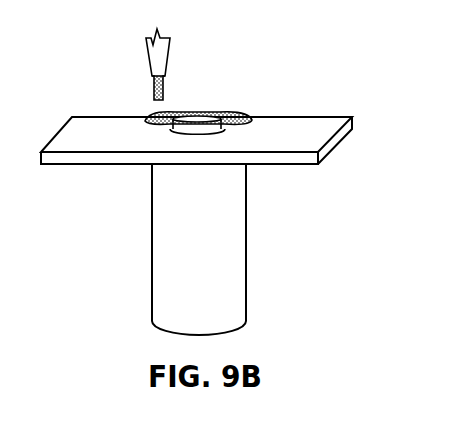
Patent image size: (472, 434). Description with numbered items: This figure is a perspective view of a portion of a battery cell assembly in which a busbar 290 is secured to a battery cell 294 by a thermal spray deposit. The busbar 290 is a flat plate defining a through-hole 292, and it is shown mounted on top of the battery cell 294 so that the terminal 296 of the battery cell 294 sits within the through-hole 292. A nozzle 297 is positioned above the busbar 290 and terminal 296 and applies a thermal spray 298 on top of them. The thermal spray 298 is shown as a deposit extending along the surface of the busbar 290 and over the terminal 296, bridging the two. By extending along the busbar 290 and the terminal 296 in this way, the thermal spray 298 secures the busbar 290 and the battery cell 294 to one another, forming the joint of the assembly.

The busbar 290 is at (317, 115).
The through-hole 292 is at (211, 133).
The battery cell 294 is at (212, 258).
The terminal 296 is at (193, 133).
The nozzle 297 is at (168, 54).
The thermal spray 298 is at (152, 92).